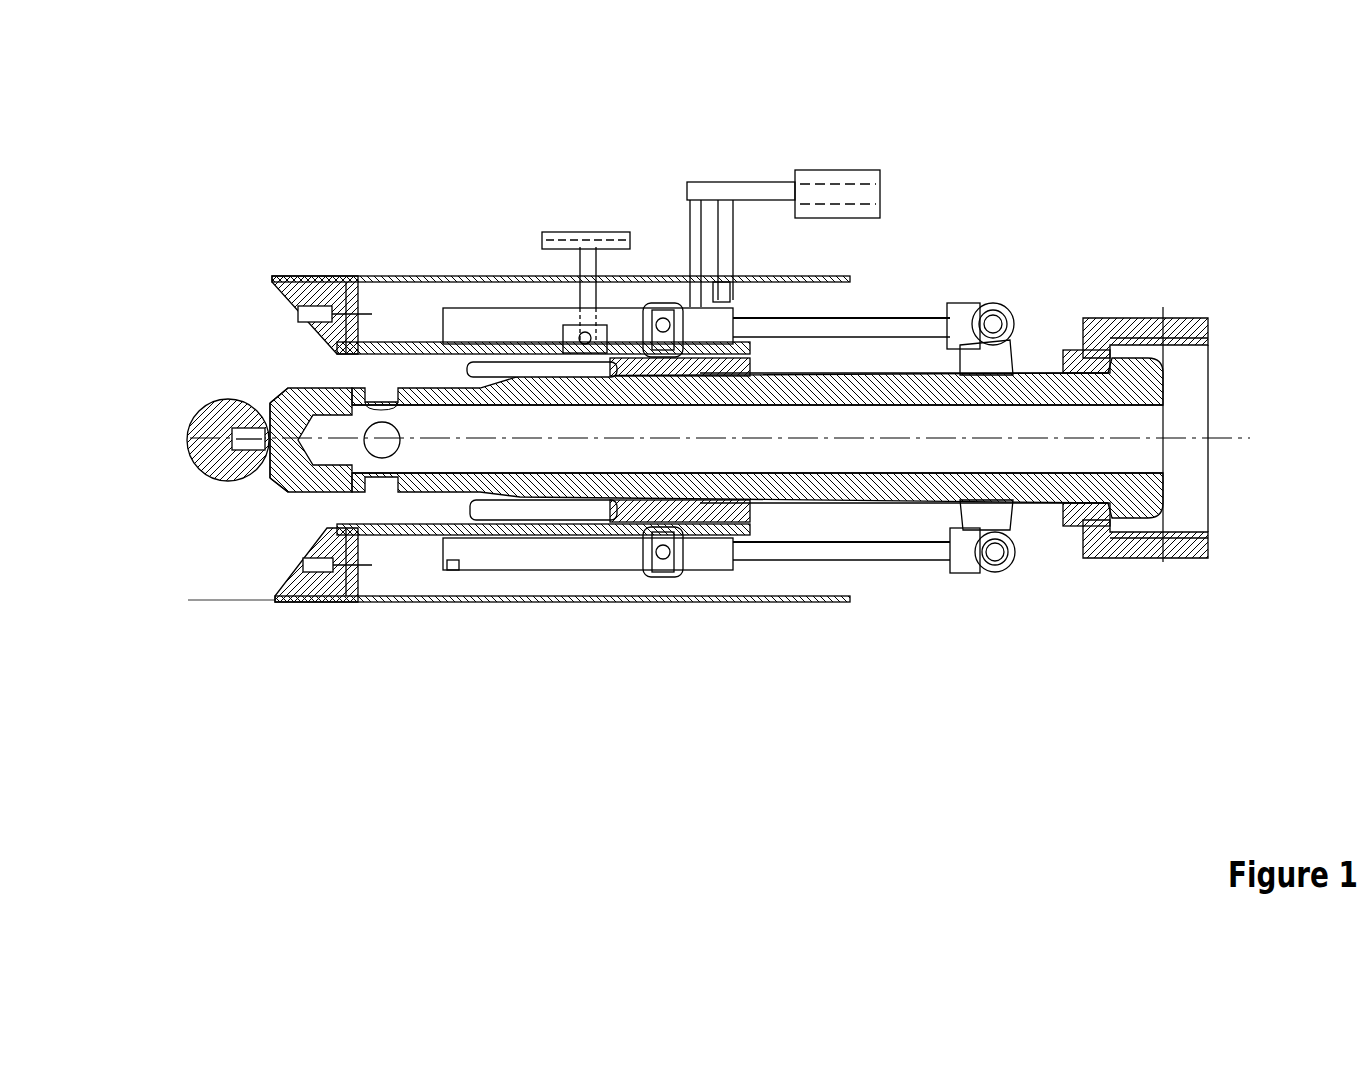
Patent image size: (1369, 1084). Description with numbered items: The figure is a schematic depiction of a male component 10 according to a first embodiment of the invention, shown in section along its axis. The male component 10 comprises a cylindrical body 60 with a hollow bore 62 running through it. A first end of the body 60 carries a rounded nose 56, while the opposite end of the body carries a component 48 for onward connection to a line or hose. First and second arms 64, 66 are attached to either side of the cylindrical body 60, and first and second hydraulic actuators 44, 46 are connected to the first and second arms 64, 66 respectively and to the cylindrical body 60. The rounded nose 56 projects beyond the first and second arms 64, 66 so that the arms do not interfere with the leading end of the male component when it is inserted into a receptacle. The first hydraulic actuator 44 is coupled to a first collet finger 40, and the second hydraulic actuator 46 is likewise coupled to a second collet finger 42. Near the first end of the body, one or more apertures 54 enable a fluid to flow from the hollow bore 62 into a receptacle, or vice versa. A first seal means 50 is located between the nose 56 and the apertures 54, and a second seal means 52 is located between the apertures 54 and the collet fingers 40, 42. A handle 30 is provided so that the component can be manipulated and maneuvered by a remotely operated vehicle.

The male component 10 is at (160, 372).
The handle 30 is at (882, 195).
The first collet finger 40 is at (487, 360).
The second collet finger 42 is at (493, 514).
The first hydraulic actuator 44 is at (537, 310).
The second hydraulic actuator 46 is at (598, 555).
The component for onward connection 48 is at (1165, 562).
The first seal means 50 is at (298, 385).
The second seal means 52 is at (455, 492).
The apertures 54 is at (377, 452).
The rounded nose 56 is at (213, 480).
The cylindrical body 60 is at (907, 499).
The hollow bore 62 is at (1158, 413).
The first arm 64 is at (277, 275).
The second arm 66 is at (333, 605).